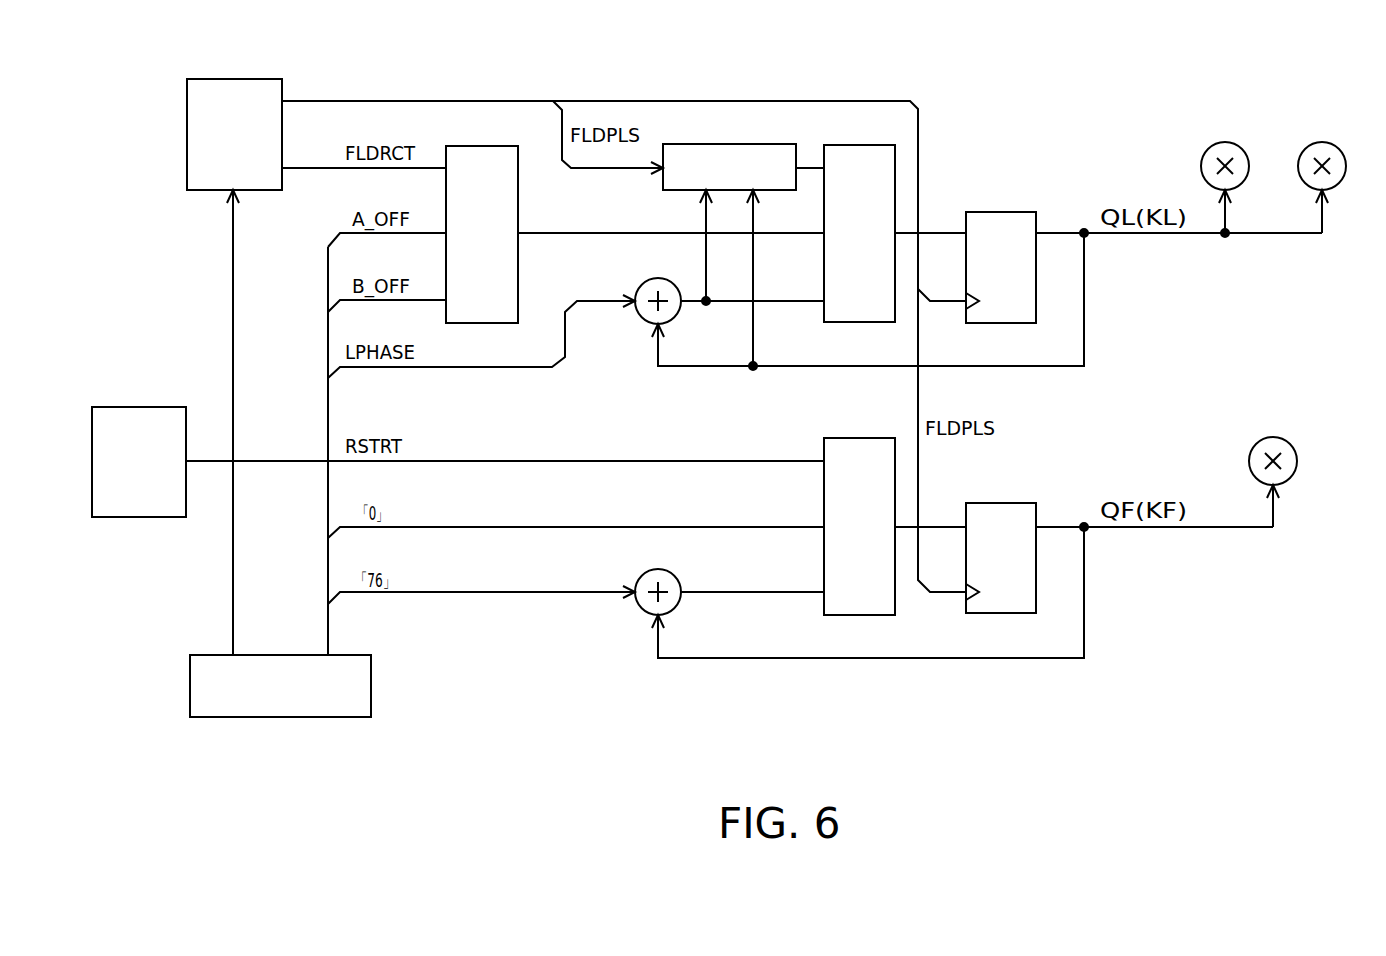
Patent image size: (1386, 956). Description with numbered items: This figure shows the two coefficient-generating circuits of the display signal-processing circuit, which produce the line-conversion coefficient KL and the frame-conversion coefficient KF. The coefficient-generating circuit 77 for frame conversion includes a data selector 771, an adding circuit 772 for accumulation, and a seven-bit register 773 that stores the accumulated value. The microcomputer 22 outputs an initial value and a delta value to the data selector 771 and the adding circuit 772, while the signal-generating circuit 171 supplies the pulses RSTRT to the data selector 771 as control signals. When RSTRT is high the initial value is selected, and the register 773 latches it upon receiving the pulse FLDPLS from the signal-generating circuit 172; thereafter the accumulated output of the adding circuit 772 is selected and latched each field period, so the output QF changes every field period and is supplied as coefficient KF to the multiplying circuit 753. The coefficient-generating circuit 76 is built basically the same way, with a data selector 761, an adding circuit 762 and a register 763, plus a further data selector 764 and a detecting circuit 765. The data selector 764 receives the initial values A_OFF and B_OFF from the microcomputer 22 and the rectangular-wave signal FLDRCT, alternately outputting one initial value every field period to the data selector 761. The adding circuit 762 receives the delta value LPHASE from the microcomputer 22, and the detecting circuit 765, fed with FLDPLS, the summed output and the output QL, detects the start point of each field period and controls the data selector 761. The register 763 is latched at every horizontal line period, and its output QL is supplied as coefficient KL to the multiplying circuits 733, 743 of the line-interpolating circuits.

The microcomputer 22 is at (258, 717).
The signal-generating circuit 171 is at (130, 406).
The signal-generating circuit 172 is at (226, 78).
The coefficient-generating circuit 76 is at (636, 418).
The coefficient-generating circuit 77 is at (636, 708).
The data selector 761 is at (847, 145).
The adding circuit 762 is at (659, 278).
The register 763 is at (990, 212).
The data selector 764 is at (470, 146).
The detecting circuit 765 is at (708, 144).
The data selector 771 is at (848, 438).
The adding circuit 772 is at (660, 569).
The register 773 is at (990, 503).
The multiplying circuit 733 is at (1229, 142).
The multiplying circuit 743 is at (1325, 142).
The multiplying circuit 753 is at (1277, 437).